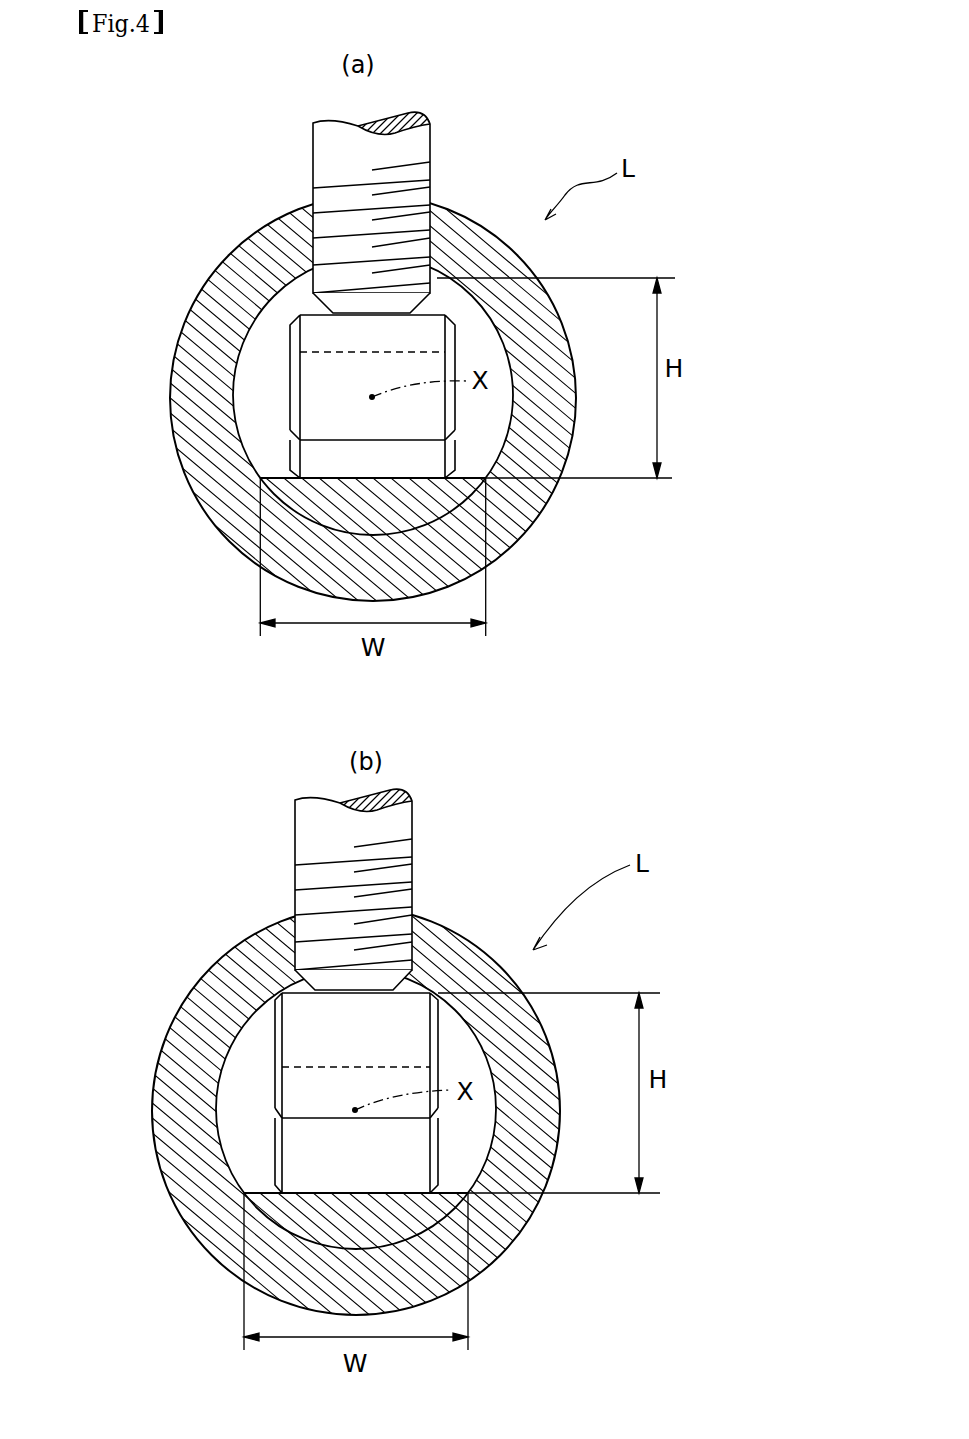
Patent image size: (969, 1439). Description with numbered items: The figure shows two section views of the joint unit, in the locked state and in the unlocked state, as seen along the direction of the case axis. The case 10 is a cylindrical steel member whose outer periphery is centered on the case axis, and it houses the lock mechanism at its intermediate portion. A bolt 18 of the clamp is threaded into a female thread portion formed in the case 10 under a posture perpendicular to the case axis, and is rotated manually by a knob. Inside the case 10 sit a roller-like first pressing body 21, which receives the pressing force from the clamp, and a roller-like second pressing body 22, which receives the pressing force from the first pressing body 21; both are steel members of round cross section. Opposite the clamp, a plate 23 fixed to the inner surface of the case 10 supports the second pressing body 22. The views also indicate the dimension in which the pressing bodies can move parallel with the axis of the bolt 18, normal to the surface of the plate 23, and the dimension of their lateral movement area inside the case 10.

The case 10 is at (236, 257).
The bolt 18 is at (430, 176).
The first pressing body 21 is at (310, 332).
The second pressing body 22 is at (305, 457).
The plate 23 is at (290, 490).